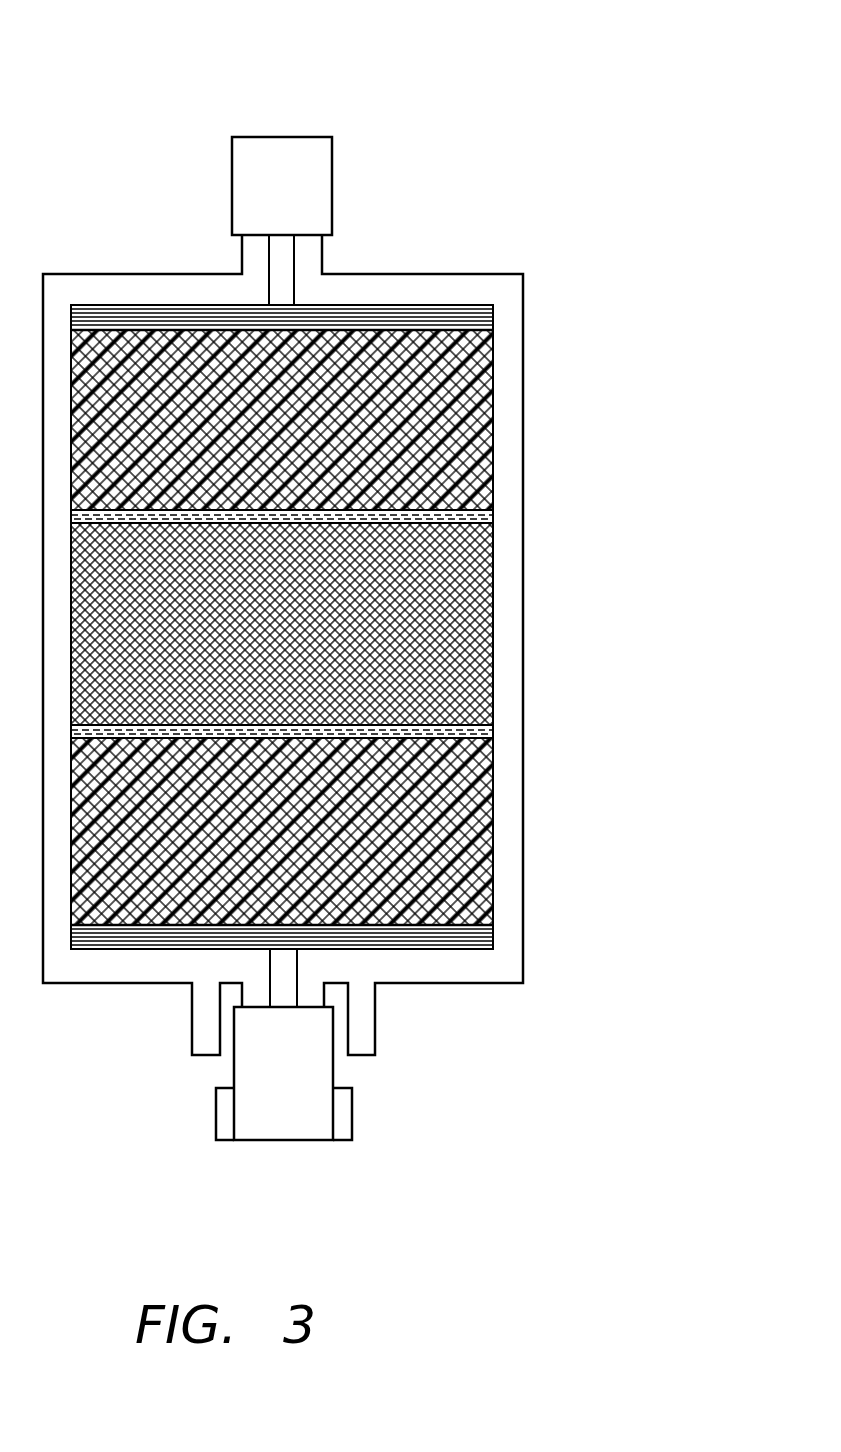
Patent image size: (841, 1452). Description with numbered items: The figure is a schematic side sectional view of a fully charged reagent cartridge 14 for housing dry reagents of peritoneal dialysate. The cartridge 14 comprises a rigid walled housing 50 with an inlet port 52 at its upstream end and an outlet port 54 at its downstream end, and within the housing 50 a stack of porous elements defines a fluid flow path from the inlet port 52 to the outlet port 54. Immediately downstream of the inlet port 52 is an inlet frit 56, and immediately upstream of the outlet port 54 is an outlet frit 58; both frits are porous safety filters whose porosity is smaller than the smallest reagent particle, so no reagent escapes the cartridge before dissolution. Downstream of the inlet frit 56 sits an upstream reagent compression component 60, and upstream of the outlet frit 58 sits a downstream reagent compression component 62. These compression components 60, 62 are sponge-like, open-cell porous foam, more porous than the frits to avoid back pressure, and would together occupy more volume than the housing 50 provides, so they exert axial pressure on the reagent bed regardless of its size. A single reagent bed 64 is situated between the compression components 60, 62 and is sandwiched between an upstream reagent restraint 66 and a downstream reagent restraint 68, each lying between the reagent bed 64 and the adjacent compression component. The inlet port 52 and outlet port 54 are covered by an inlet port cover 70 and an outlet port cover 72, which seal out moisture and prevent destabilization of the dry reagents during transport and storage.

The reagent cartridge 14 is at (400, 36).
The rigid walled housing 50 is at (516, 566).
The inlet port 52 is at (283, 267).
The outlet port 54 is at (287, 983).
The inlet frit 56 is at (425, 307).
The outlet frit 58 is at (470, 932).
The upstream reagent compression component 60 is at (490, 358).
The downstream reagent compression component 62 is at (435, 807).
The reagent bed 64 is at (388, 625).
The upstream reagent restraint 66 is at (487, 510).
The downstream reagent restraint 68 is at (487, 728).
The inlet port cover 70 is at (258, 165).
The outlet port cover 72 is at (298, 1075).